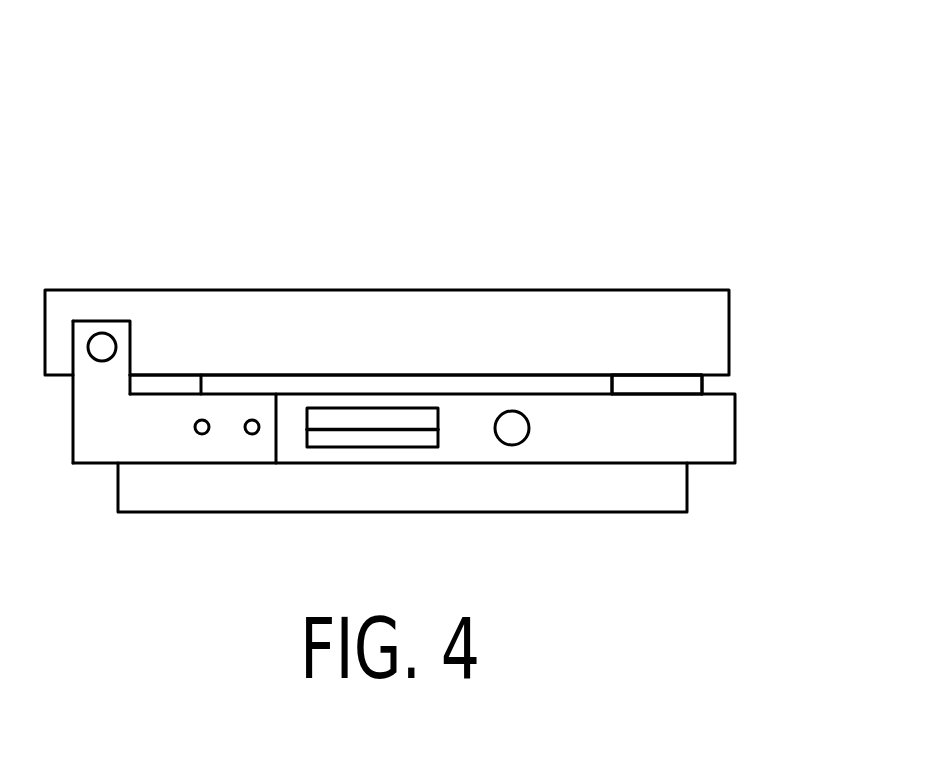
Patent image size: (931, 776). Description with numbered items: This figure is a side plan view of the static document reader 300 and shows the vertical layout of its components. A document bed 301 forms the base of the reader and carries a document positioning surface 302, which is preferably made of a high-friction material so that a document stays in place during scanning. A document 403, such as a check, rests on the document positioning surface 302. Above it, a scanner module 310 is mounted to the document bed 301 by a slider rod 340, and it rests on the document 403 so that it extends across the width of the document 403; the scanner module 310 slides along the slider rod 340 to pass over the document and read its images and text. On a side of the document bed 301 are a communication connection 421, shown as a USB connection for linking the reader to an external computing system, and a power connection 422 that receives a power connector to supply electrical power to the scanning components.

The static document reader 300 is at (621, 131).
The scanner module 310 is at (628, 288).
The slider rod 340 is at (95, 334).
The document bed 301 is at (717, 432).
The document positioning surface 302 is at (610, 380).
The document 403 is at (668, 380).
The communication connection 421 is at (377, 448).
The power connection 422 is at (517, 447).